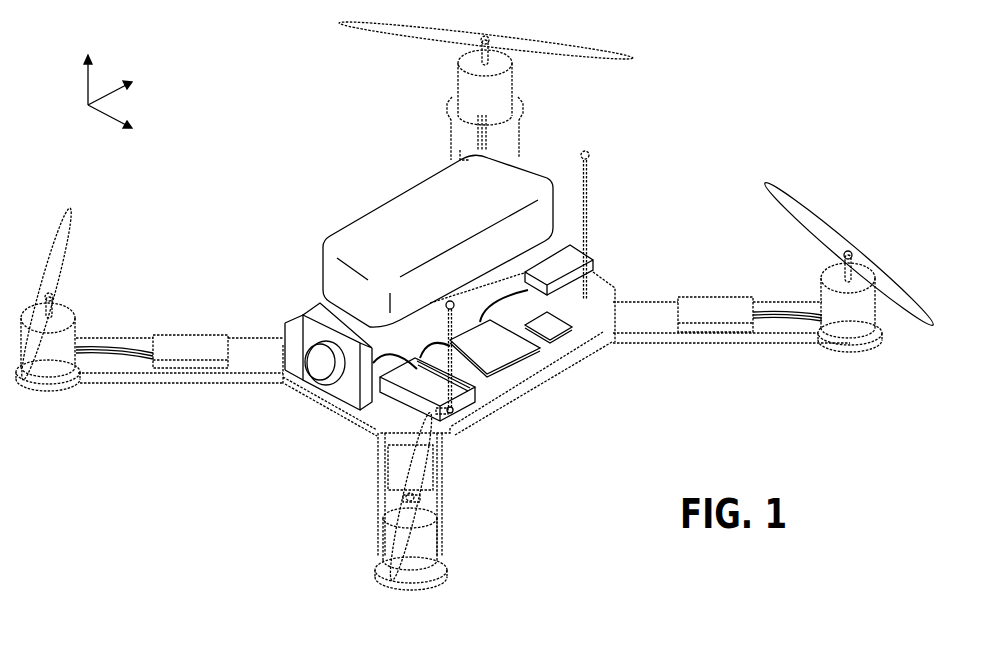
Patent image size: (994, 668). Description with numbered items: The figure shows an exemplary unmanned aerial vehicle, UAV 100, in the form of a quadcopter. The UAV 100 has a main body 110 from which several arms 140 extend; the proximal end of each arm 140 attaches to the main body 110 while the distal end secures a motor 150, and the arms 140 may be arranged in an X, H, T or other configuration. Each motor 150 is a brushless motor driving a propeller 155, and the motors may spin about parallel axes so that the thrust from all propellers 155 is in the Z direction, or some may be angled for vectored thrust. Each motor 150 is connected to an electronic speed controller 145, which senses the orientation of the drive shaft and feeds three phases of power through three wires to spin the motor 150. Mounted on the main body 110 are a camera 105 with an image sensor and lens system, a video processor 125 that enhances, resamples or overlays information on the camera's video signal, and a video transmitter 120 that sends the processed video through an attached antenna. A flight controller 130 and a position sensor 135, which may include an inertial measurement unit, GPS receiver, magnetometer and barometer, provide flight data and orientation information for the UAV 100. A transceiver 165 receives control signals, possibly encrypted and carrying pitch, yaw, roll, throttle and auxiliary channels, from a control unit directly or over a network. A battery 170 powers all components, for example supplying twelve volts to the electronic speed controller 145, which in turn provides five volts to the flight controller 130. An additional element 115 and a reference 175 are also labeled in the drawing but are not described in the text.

The unmanned aerial vehicle 100 is at (477, 303).
The camera 105 is at (294, 318).
The main body 110 is at (283, 374).
The camera 115 is at (360, 415).
The video transmitter 120 is at (452, 412).
The video processor 125 is at (478, 390).
The flight controller 130 is at (512, 351).
The position sensor 135 is at (560, 333).
The arm 140 is at (663, 343).
The electronic speed controller 145 is at (744, 326).
The motor 150 is at (867, 322).
The propeller 155 is at (790, 205).
The transceiver 165 is at (583, 267).
The battery 170 is at (395, 211).
The coordinate axes 175 is at (128, 53).